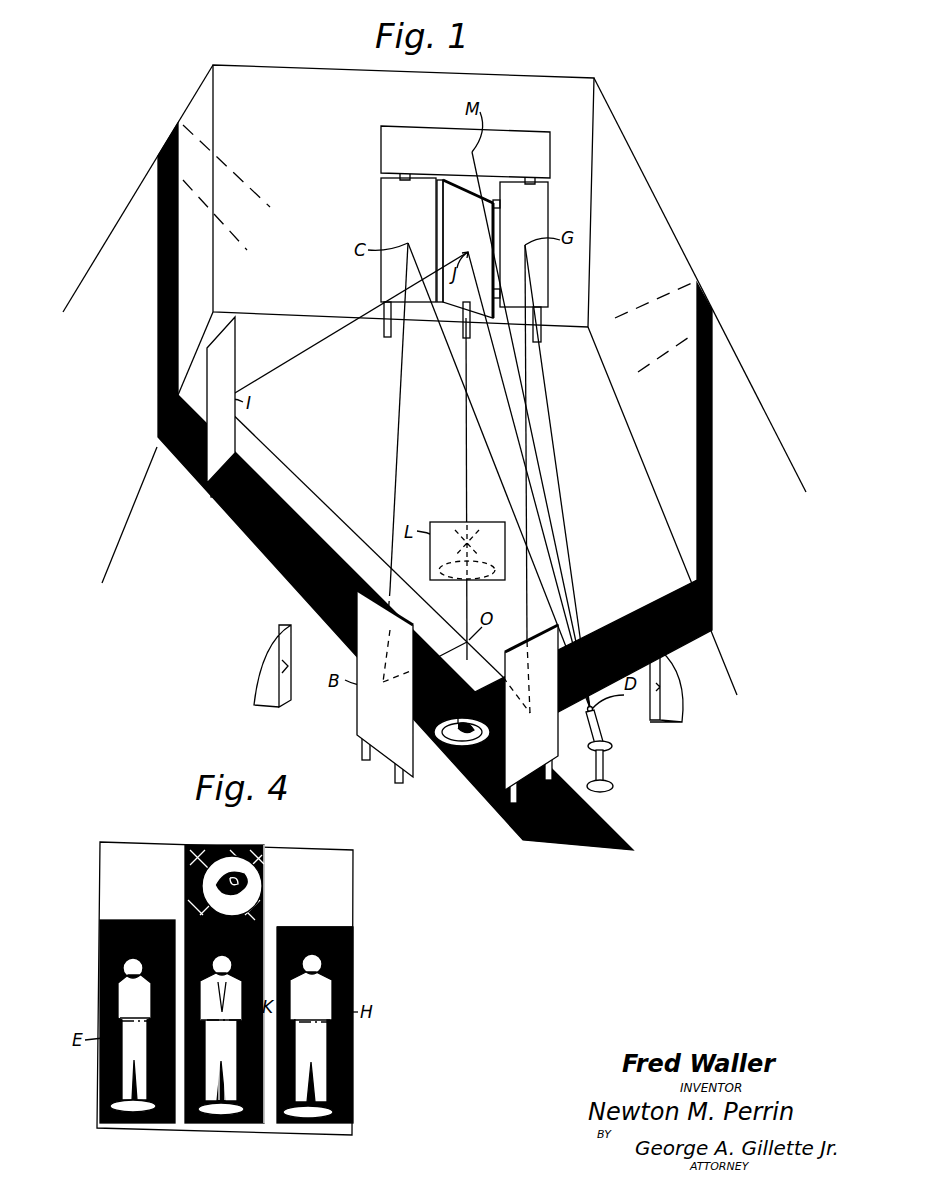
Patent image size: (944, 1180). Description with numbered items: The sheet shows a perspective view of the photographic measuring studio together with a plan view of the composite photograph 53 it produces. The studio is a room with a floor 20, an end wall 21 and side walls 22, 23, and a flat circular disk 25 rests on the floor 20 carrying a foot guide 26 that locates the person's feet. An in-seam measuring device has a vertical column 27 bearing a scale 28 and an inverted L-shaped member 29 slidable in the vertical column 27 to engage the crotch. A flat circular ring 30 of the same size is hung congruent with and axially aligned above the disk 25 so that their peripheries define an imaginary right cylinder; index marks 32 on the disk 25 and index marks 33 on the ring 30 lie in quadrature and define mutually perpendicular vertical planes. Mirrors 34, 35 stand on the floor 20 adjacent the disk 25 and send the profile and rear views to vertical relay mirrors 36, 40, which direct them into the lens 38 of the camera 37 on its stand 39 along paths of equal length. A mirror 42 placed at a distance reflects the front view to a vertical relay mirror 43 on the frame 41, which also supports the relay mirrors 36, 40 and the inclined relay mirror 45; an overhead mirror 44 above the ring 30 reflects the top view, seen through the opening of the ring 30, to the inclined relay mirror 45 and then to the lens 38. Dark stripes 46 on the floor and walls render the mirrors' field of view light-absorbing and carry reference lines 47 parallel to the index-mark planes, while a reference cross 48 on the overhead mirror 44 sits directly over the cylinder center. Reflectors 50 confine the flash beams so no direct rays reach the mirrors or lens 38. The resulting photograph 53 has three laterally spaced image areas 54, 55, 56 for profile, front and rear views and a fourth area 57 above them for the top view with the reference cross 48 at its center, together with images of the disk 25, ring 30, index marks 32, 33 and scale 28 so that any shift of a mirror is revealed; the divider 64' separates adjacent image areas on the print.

In FIG. 1, the floor 20 is at (326, 406).
In FIG. 1, the end wall 21 is at (322, 83).
In FIG. 1, the side wall 22 is at (130, 210).
In FIG. 1, the side wall 23 is at (639, 180).
In FIG. 1, the flat circular disk 25 is at (454, 745).
In FIG. 4, the flat circular disk 25 is at (262, 890).
In FIG. 1, the foot guide 26 is at (454, 764).
In FIG. 1, the vertical column 27 is at (444, 742).
In FIG. 4, the vertical column 27 is at (100, 1072).
In FIG. 4, the scale 28 is at (205, 1125).
In FIG. 1, the inverted L-shaped member 29 is at (462, 700).
In FIG. 4, the inverted L-shaped member 29 is at (110, 1045).
In FIG. 1, the flat circular ring 30 is at (444, 564).
In FIG. 4, the flat circular ring 30 is at (217, 848).
In FIG. 4, the index marks 32 is at (312, 927).
In FIG. 4, the index marks 33 is at (302, 1122).
In FIG. 1, the mirror 34 is at (357, 700).
In FIG. 1, the mirror 35 is at (556, 728).
In FIG. 1, the vertical relay mirror 36 is at (381, 224).
In FIG. 1, the camera 37 is at (604, 728).
In FIG. 1, the lens 38 is at (596, 710).
In FIG. 1, the stand 39 is at (604, 765).
In FIG. 1, the vertical relay mirror 40 is at (544, 212).
In FIG. 1, the frame 41 is at (440, 305).
In FIG. 1, the mirror 42 is at (233, 358).
In FIG. 1, the vertical relay mirror 43 is at (471, 249).
In FIG. 1, the overhead mirror 44 is at (440, 528).
In FIG. 1, the inclined relay mirror 45 is at (437, 137).
In FIG. 1, the dark stripes 46 is at (158, 300).
In FIG. 1, the reference lines 47 is at (476, 771).
In FIG. 4, the reference lines 47 is at (262, 856).
In FIG. 1, the reference mark or cross 48 is at (478, 529).
In FIG. 4, the reference mark or cross 48 is at (243, 848).
In FIG. 1, the reflector 50 is at (676, 700).
In FIG. 4, the photograph 53 is at (100, 882).
In FIG. 4, the profile image area 54 is at (142, 1120).
In FIG. 4, the image area 55 is at (238, 1125).
In FIG. 4, the rear view image area 56 is at (352, 1031).
In FIG. 4, the fourth area 57 is at (200, 840).
In FIG. 4, the panel divider 64' is at (275, 1000).